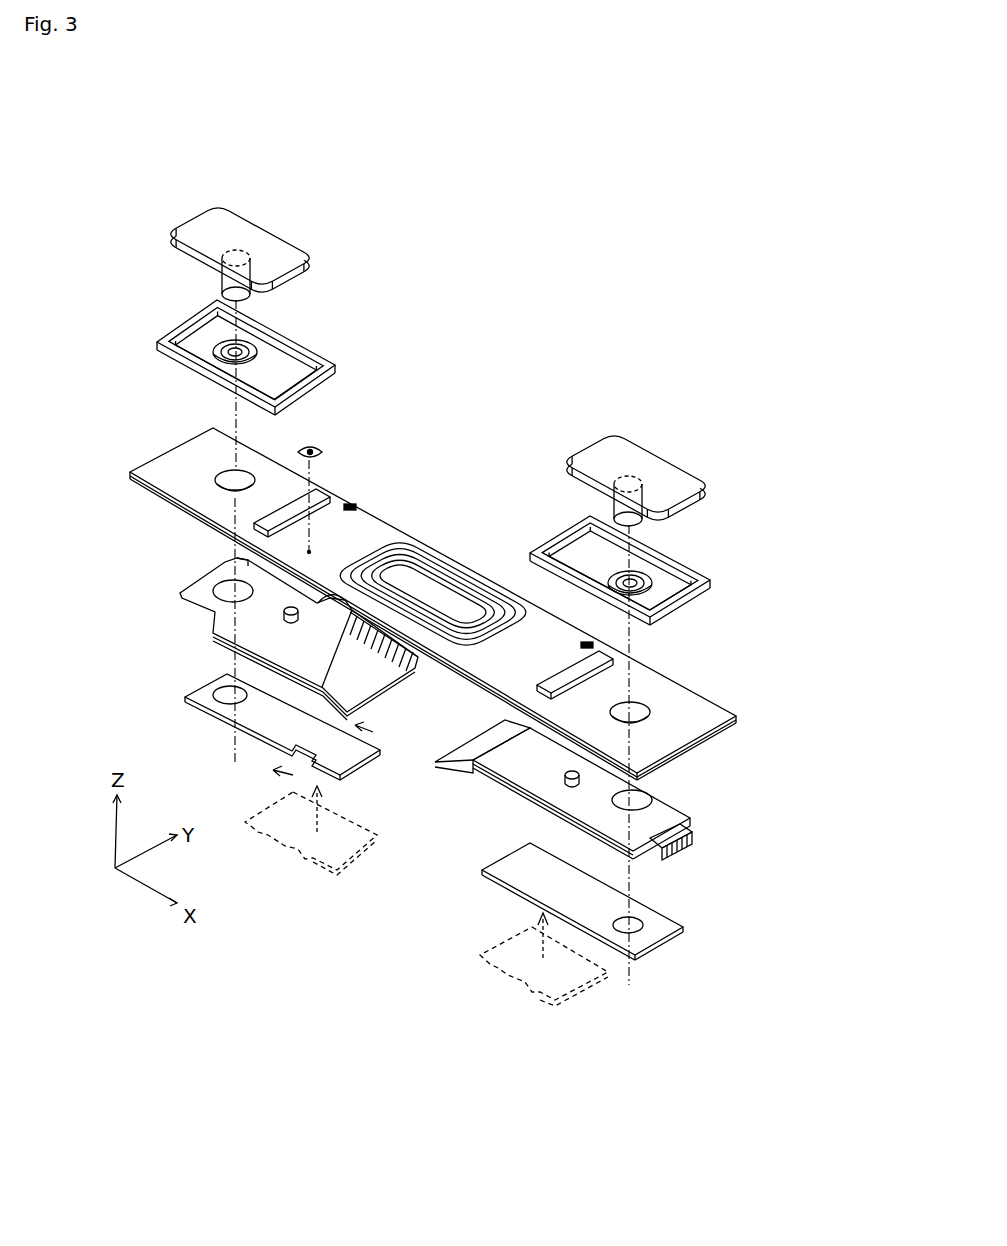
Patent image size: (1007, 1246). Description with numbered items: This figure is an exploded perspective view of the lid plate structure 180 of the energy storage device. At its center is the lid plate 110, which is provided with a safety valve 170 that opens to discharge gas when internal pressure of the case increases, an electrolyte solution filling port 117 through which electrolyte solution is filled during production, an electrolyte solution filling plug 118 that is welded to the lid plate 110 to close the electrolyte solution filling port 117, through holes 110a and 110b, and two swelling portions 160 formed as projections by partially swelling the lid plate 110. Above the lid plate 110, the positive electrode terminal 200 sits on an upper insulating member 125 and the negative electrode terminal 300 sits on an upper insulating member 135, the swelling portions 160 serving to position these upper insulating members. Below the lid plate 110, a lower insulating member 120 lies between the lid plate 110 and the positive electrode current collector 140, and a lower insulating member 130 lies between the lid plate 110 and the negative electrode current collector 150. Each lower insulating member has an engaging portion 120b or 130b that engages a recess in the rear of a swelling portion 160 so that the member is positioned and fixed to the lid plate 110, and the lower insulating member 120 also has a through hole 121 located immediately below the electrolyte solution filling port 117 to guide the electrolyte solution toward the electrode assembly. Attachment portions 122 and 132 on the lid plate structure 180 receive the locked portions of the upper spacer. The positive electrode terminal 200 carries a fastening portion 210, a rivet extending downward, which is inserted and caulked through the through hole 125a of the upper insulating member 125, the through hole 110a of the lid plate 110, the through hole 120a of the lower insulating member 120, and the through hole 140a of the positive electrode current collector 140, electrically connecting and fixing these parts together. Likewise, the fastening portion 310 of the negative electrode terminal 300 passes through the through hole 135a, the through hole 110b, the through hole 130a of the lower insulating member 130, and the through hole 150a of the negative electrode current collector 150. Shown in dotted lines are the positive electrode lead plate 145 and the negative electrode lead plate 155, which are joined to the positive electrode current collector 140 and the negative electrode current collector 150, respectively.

The lid plate 110 is at (678, 700).
The through hole 110a is at (222, 466).
The through hole 110b is at (673, 722).
The electrolyte solution filling port 117 is at (318, 532).
The electrolyte solution filling plug 118 is at (318, 440).
The lower insulating member 120 is at (187, 568).
The through hole 120a is at (200, 565).
The engaging portion 120b is at (287, 602).
The through hole 121 is at (360, 678).
The attachment portion 122 is at (207, 565).
The upper insulating member 125 is at (313, 367).
The through hole 125a is at (220, 343).
The lower insulating member 130 is at (683, 833).
The through hole 130a is at (640, 797).
The engaging portion 130b is at (557, 760).
The attachment portion 132 is at (687, 820).
The upper insulating member 135 is at (700, 573).
The through hole 135a is at (640, 567).
The positive electrode current collector 140 is at (200, 680).
The through hole 140a is at (220, 688).
The positive electrode lead plate 145 is at (318, 862).
The negative electrode current collector 150 is at (650, 938).
The through hole 150a is at (637, 910).
The negative electrode lead plate 155 is at (540, 1000).
The swelling portion 160 is at (320, 483).
The safety valve 170 is at (428, 600).
The lid plate structure 180 is at (747, 393).
The positive electrode terminal 200 is at (263, 242).
The fastening portion 210 is at (242, 292).
The negative electrode terminal 300 is at (645, 468).
The fastening portion 310 is at (605, 497).